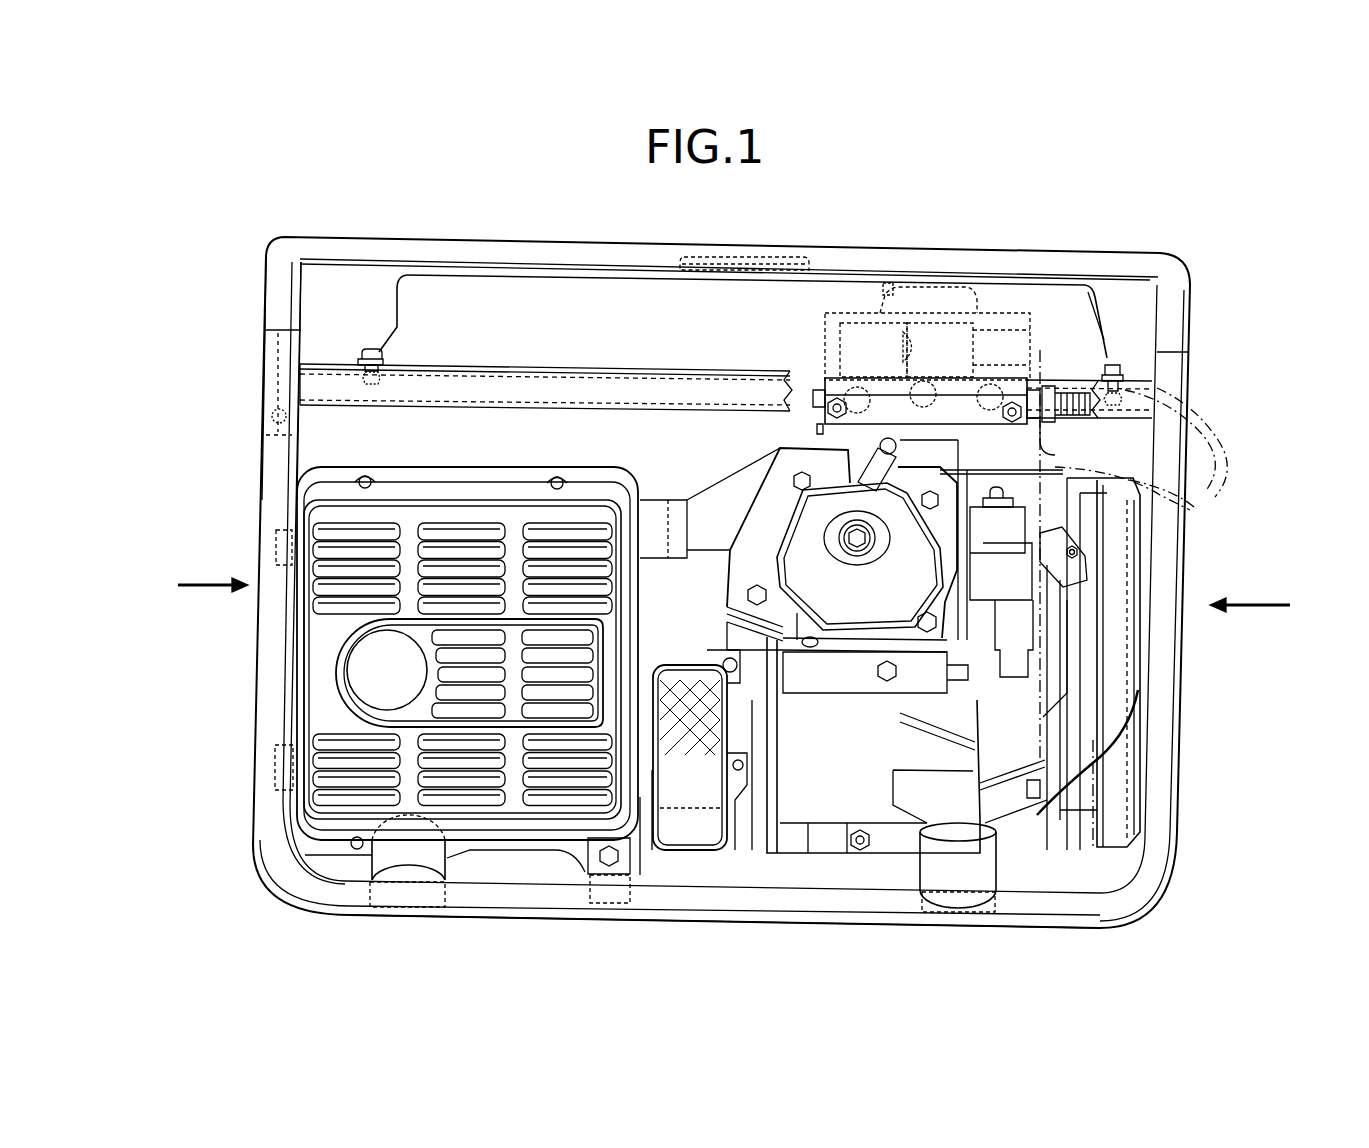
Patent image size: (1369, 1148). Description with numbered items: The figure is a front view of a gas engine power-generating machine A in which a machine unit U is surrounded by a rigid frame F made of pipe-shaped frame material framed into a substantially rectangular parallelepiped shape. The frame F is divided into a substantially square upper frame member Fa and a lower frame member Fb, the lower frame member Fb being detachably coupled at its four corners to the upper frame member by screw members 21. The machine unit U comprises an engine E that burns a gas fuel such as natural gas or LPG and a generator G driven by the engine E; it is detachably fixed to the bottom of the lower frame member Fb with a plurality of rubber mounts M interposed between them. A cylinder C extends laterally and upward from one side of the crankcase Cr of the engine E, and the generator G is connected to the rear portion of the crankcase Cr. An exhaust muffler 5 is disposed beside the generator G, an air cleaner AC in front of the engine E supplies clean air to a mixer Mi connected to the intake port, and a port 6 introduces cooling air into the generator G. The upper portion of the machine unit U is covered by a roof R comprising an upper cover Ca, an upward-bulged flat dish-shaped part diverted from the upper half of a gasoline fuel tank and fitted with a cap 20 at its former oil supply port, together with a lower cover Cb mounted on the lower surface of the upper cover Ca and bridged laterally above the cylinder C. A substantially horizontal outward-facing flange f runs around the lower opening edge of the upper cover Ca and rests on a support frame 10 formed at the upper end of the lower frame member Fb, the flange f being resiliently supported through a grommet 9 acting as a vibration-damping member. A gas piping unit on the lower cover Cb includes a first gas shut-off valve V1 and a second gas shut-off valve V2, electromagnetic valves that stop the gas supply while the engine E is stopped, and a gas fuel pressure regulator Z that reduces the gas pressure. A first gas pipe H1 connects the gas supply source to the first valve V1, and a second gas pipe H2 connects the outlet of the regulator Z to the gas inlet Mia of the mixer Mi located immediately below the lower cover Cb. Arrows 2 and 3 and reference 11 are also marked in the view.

The gas engine power-generating machine A is at (640, 230).
The rigid frame F is at (182, 322).
The upper frame member Fa is at (268, 307).
The lower frame member Fb is at (262, 447).
The roof R is at (390, 311).
The upper cover Ca is at (1103, 326).
The flange f is at (512, 370).
The support frame 10 is at (327, 368).
The grommet 9 is at (388, 360).
The bolt 11 is at (368, 347).
The screw member 21 is at (298, 422).
The cap 20 is at (738, 256).
The gas fuel pressure regulator Z is at (928, 280).
The gas shut-off valve V2 is at (840, 345).
The gas shut-off valve V1 is at (1028, 340).
The lower cover Cb is at (1000, 432).
The first gas pipe H1 is at (1233, 412).
The second gas pipe H2 is at (1196, 510).
The exhaust muffler 5 is at (462, 505).
The view arrow 3 is at (190, 592).
The view arrow 2 is at (1271, 614).
The generator G is at (643, 872).
The cylinder C is at (805, 513).
The port 6 is at (687, 840).
The crankcase Cr is at (768, 855).
The machine unit U is at (830, 866).
The rubber mount M is at (442, 852).
The mixer Mi is at (987, 634).
The gas inlet Mia is at (1045, 632).
The air cleaner AC is at (1125, 562).
The engine E is at (1047, 868).